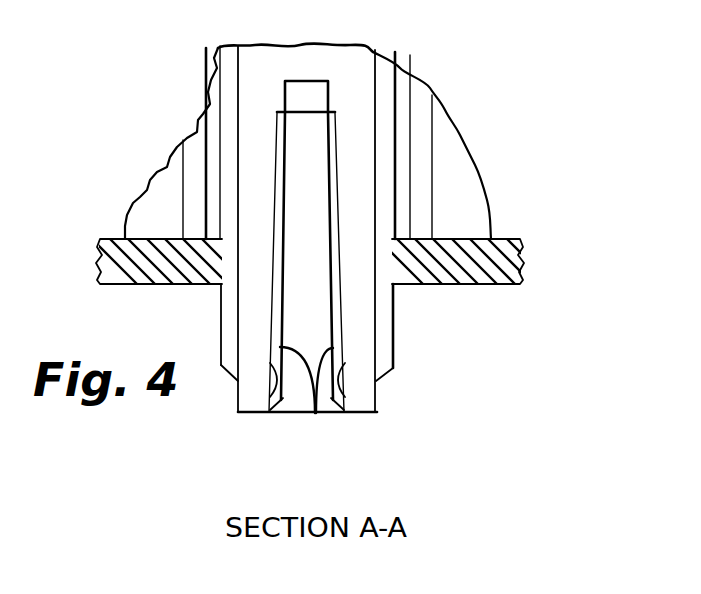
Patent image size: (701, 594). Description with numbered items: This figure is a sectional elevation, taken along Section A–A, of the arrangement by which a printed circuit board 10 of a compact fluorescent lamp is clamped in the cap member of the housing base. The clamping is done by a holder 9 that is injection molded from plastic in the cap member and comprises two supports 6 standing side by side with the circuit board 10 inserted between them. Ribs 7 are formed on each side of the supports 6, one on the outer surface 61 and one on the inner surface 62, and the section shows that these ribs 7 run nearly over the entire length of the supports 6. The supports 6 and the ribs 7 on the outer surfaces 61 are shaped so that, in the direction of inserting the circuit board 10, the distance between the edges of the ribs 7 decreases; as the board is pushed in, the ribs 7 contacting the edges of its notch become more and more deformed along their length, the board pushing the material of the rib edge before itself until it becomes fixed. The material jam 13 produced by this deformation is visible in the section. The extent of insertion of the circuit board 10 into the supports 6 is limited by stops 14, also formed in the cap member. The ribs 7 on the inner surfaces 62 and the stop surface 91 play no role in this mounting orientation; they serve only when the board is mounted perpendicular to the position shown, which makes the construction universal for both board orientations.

The support 6 is at (245, 318).
The rib 7 is at (230, 369).
The holder 9 is at (260, 83).
The circuit board 10 is at (520, 240).
The material jam 13 is at (208, 238).
The stop 14 is at (188, 177).
The outer surface 61 is at (238, 294).
The inner surface 62 is at (272, 408).
The stop surface 91 is at (305, 112).